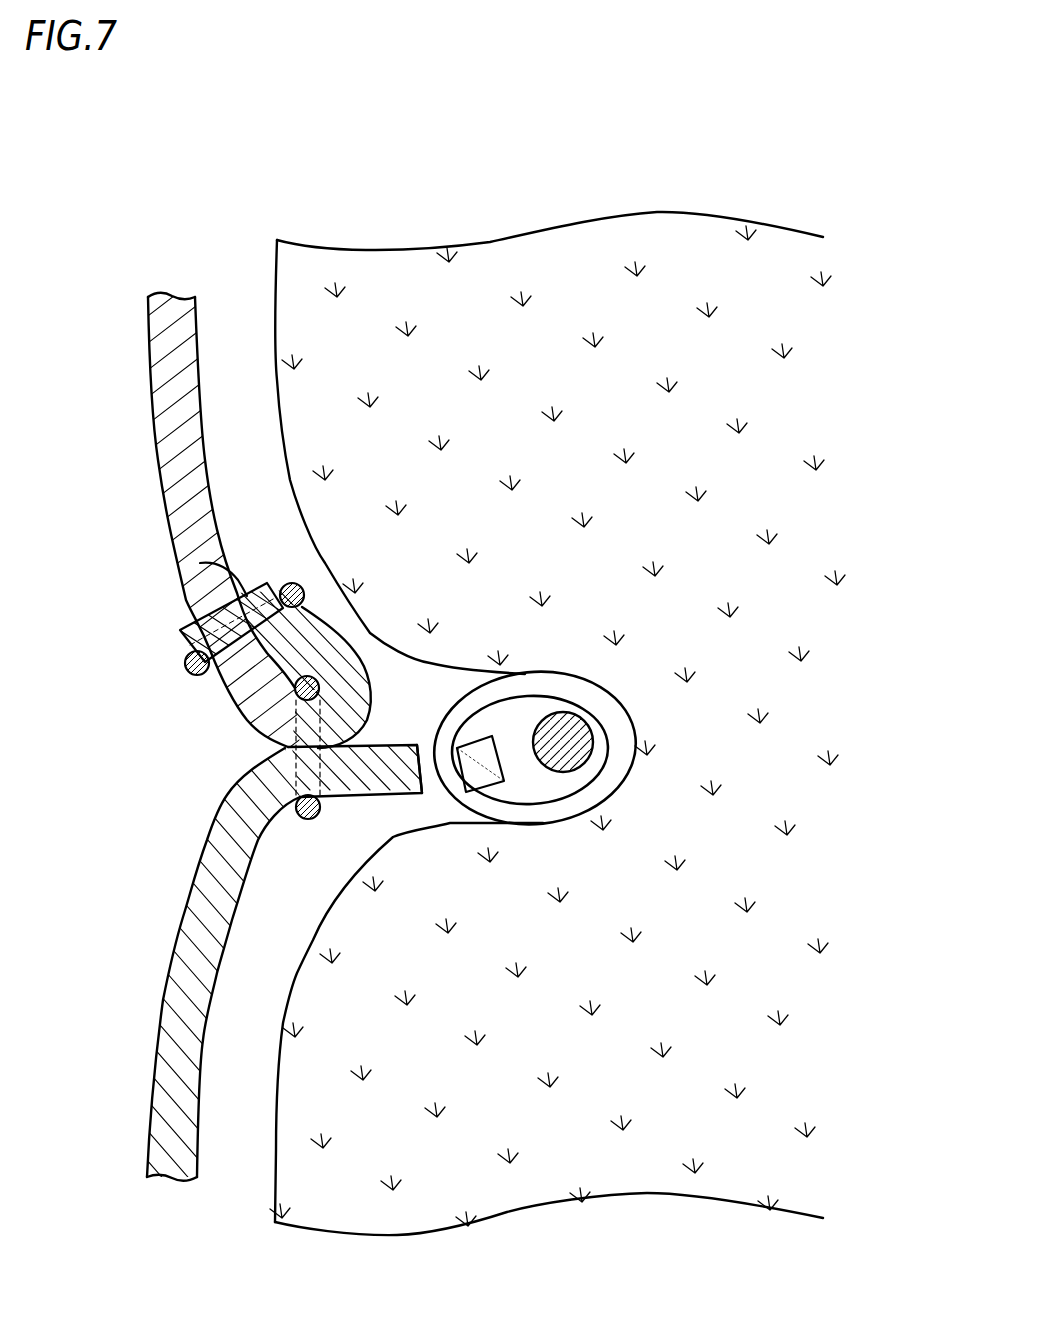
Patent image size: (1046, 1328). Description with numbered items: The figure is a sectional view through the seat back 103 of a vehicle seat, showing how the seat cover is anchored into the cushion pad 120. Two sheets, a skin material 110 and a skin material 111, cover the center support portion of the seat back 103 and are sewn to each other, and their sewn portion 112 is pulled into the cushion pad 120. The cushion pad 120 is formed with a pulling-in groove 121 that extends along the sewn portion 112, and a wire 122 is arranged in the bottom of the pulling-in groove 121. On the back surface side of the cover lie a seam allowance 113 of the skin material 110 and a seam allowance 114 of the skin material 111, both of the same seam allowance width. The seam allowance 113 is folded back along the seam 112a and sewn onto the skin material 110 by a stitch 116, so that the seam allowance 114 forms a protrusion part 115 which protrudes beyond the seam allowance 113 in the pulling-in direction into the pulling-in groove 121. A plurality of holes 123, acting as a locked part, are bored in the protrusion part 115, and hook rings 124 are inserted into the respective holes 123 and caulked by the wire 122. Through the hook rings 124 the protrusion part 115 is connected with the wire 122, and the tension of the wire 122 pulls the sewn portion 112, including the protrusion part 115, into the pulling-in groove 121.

The seat back 103 is at (757, 207).
The skin material 110 is at (165, 432).
The skin material 111 is at (165, 1088).
The sewn portion 112 is at (287, 743).
The seam 112a is at (270, 680).
The seam allowance 113 is at (200, 563).
The seam allowance 114 is at (340, 813).
The protrusion part 115 is at (403, 778).
The stitch 116 is at (186, 668).
The cushion pad 120 is at (567, 267).
The pulling-in groove 121 is at (490, 693).
The wire 122 is at (580, 745).
The holes 123 is at (470, 792).
The hook rings 124 is at (577, 790).